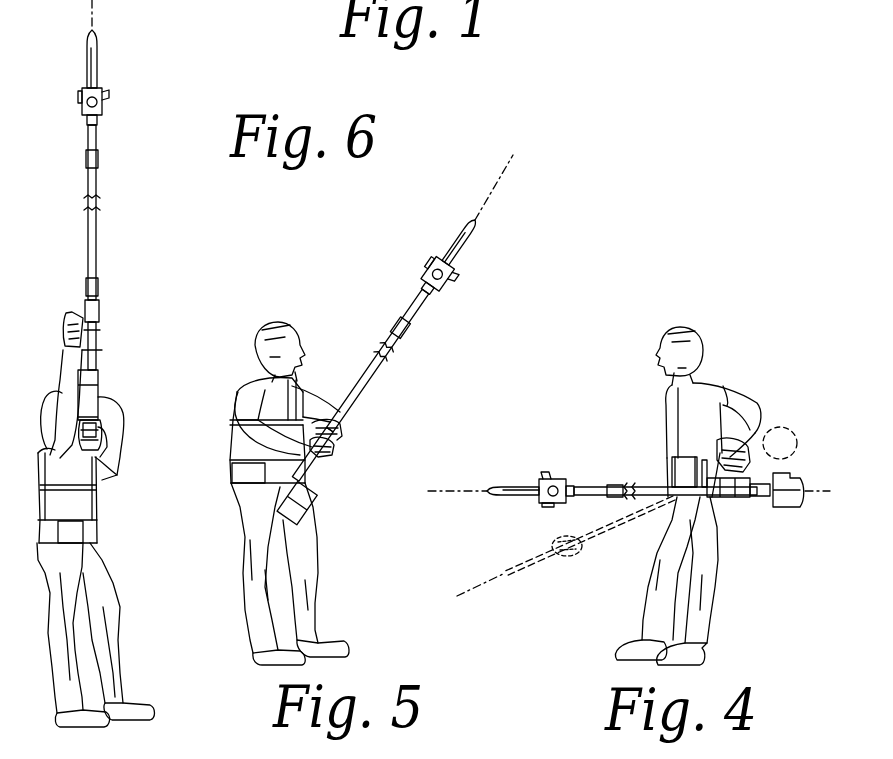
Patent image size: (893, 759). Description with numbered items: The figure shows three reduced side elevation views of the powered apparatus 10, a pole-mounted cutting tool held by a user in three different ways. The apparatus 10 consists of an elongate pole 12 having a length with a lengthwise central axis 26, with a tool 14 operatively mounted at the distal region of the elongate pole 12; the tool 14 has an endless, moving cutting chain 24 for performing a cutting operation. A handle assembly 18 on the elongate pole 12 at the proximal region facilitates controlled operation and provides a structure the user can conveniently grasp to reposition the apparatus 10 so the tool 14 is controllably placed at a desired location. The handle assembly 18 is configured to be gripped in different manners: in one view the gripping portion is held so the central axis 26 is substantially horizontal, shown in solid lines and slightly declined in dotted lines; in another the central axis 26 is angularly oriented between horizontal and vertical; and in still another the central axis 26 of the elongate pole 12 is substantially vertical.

In FIG. 6, the powered apparatus 10 is at (146, 233).
In FIG. 5, the powered apparatus 10 is at (401, 371).
In FIG. 4, the powered apparatus 10 is at (637, 504).
In FIG. 6, the elongate pole 12 is at (94, 236).
In FIG. 5, the elongate pole 12 is at (370, 372).
In FIG. 4, the elongate pole 12 is at (659, 487).
In FIG. 6, the tool 14 is at (108, 102).
In FIG. 5, the tool 14 is at (452, 293).
In FIG. 4, the tool 14 is at (540, 508).
In FIG. 6, the handle assembly 18 is at (68, 312).
In FIG. 5, the handle assembly 18 is at (322, 420).
In FIG. 4, the handle assembly 18 is at (753, 466).
In FIG. 6, the cutting chain 24 is at (97, 62).
In FIG. 5, the cutting chain 24 is at (467, 244).
In FIG. 4, the cutting chain 24 is at (521, 487).
In FIG. 6, the central axis 26 is at (93, 17).
In FIG. 5, the central axis 26 is at (500, 185).
In FIG. 4, the central axis 26 is at (452, 489).